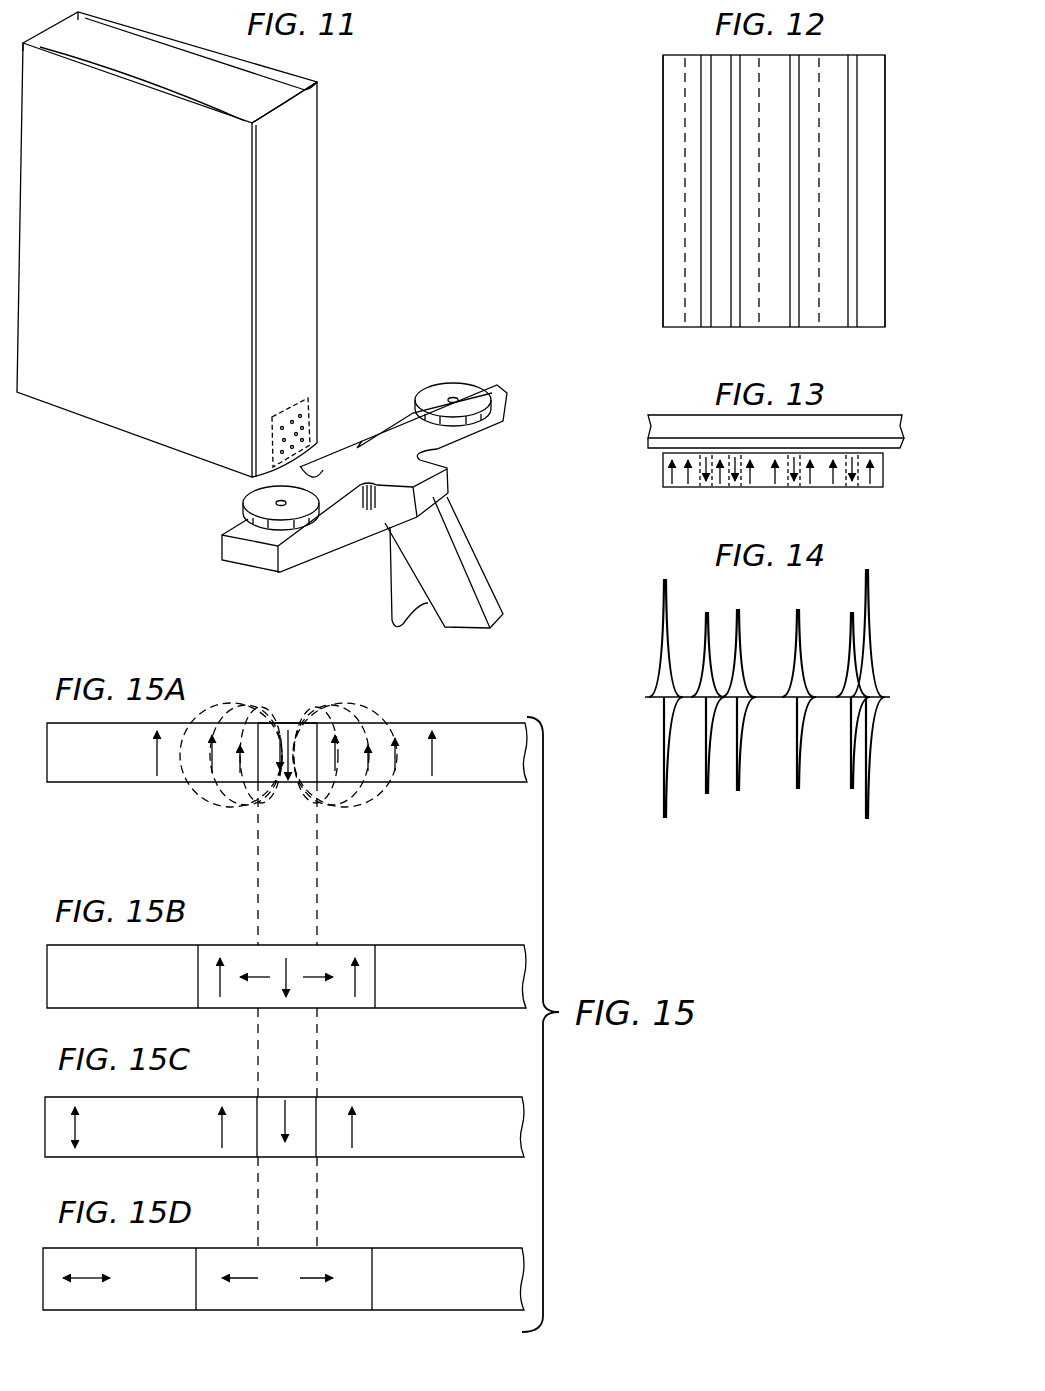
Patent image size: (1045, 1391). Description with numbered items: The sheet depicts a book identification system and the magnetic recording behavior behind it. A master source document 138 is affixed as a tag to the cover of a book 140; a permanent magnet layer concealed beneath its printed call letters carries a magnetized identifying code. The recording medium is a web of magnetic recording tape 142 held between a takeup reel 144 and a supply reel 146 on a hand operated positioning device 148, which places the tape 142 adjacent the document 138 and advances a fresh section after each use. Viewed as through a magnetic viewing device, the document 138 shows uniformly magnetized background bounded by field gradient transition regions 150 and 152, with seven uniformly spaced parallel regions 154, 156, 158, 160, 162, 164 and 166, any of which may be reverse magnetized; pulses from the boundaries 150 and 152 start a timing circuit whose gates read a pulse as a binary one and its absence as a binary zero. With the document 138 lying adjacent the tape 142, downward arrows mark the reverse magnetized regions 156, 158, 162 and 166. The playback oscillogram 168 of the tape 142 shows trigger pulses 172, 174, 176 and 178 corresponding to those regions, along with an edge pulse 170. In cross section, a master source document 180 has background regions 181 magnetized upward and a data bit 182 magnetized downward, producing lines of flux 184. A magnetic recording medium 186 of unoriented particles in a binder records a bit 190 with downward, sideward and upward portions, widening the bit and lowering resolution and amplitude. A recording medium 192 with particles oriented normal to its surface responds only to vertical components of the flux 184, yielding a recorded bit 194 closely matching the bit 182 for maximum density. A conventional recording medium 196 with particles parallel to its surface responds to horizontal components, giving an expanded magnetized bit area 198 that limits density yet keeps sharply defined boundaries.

In FIG. 11, the master source document 138 is at (270, 430).
In FIG. 12, the master source document 138 is at (662, 117).
In FIG. 13, the master source document 138 is at (663, 467).
In FIG. 11, the book 140 is at (140, 263).
In FIG. 11, the web of magnetic recording tape 142 is at (373, 427).
In FIG. 13, the web of magnetic recording tape 142 is at (648, 420).
In FIG. 11, the takeup reel 144 is at (453, 388).
In FIG. 11, the supply reel 146 is at (257, 500).
In FIG. 11, the hand operated positioning device 148 is at (460, 543).
In FIG. 12, the transition region 150 is at (663, 210).
In FIG. 12, the transition region 152 is at (882, 223).
In FIG. 12, the parallel region 154 is at (683, 307).
In FIG. 12, the parallel region 156 is at (708, 325).
In FIG. 12, the parallel region 158 is at (732, 323).
In FIG. 12, the parallel region 160 is at (762, 303).
In FIG. 12, the parallel region 162 is at (793, 323).
In FIG. 12, the parallel region 164 is at (820, 307).
In FIG. 12, the parallel region 166 is at (853, 293).
In FIG. 14, the signal waveform 168 is at (872, 637).
In FIG. 14, the signal pulse 170 is at (663, 612).
In FIG. 14, the trigger pulse 172 is at (707, 665).
In FIG. 14, the trigger pulse 174 is at (740, 652).
In FIG. 14, the trigger pulse 176 is at (800, 623).
In FIG. 14, the trigger pulse 178 is at (852, 663).
In FIG. 15A, the master source document 180 is at (122, 782).
In FIG. 15A, the background regions 181 is at (110, 765).
In FIG. 15A, the data bit 182 is at (287, 722).
In FIG. 15A, the lines of flux 184 is at (332, 712).
In FIG. 15B, the magnetic recording medium 186 is at (442, 948).
In FIG. 15B, the recorded magnetic bit 190 is at (333, 947).
In FIG. 15C, the recording medium 192 is at (418, 1097).
In FIG. 15C, the recorded bit 194 is at (302, 1097).
In FIG. 15D, the recording medium 196 is at (440, 1248).
In FIG. 15D, the expanded magnetized bit area 198 is at (332, 1250).